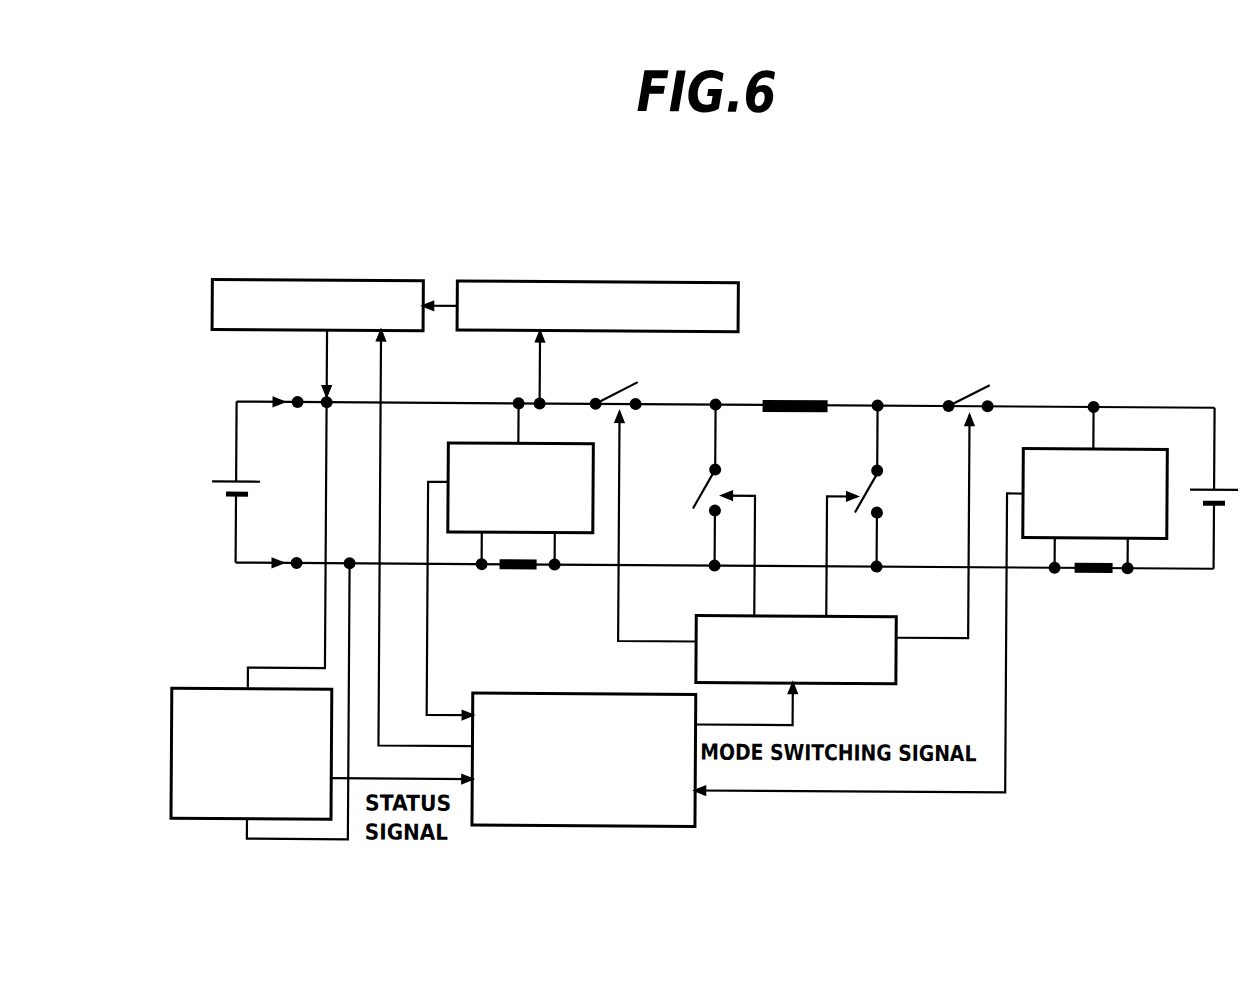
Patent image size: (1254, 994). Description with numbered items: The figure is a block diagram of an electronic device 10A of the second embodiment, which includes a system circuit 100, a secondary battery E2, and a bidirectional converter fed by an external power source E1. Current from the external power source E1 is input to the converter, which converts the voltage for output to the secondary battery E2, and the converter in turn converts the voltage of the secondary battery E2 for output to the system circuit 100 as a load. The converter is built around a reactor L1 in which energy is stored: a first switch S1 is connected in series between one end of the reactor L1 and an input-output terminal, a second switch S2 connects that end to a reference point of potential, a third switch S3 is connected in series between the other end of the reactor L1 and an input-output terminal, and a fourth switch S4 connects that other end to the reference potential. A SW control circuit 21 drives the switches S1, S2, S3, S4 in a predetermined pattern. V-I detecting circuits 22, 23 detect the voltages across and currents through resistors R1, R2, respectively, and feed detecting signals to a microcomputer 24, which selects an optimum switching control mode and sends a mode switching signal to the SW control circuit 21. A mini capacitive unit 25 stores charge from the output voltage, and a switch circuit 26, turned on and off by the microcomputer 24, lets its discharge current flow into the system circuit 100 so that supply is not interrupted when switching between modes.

The electronic device 10A is at (756, 241).
The SW control circuit 21 is at (897, 657).
The V-I detecting circuit 22 is at (475, 444).
The V-I detecting circuit 23 is at (1122, 446).
The microcomputer 24 is at (580, 692).
The mini capacitive unit 25 is at (492, 281).
The switch circuit 26 is at (273, 281).
The system circuit 100 is at (217, 822).
The external power source E1 is at (228, 474).
The secondary battery E2 is at (1220, 485).
The first switch S1 is at (617, 381).
The second switch S2 is at (691, 484).
The third switch S3 is at (969, 384).
The fourth switch S4 is at (889, 485).
The reactor L1 is at (827, 392).
The resistor R1 is at (517, 570).
The resistor R2 is at (1090, 573).